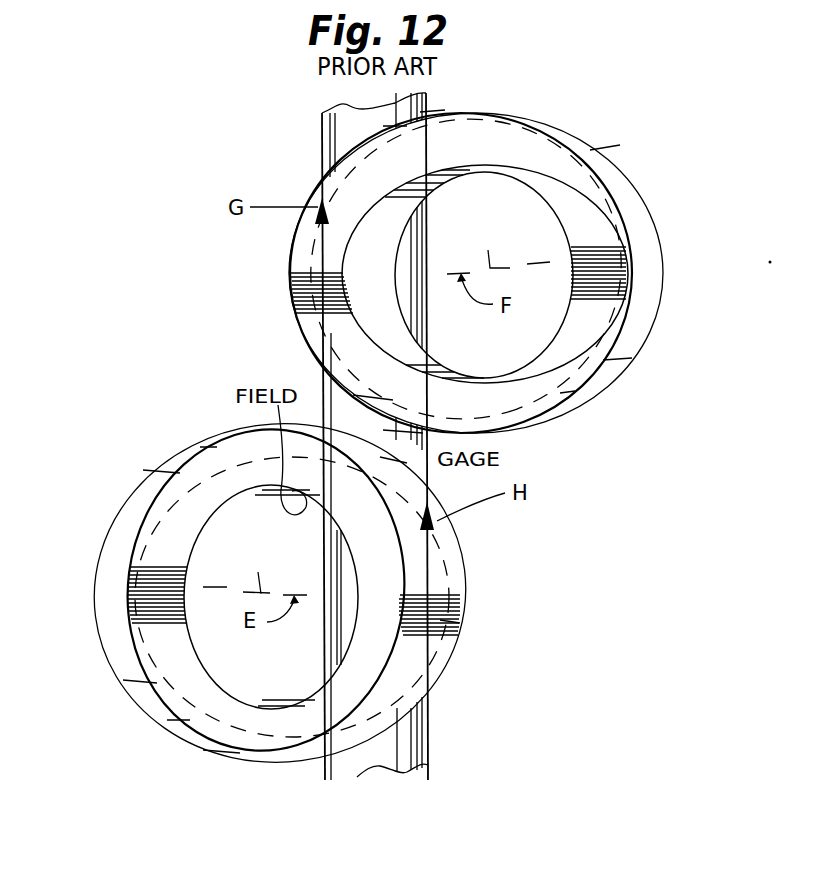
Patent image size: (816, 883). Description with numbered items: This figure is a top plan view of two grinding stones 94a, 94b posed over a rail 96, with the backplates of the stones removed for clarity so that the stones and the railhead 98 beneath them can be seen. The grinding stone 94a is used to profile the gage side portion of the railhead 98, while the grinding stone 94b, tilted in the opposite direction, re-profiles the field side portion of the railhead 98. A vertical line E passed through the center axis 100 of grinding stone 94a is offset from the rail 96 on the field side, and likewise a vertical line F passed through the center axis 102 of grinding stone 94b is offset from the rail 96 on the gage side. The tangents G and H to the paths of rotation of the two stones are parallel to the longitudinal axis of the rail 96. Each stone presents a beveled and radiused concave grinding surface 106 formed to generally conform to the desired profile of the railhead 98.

The grinding stone 94a is at (220, 416).
The grinding stone 94b is at (582, 113).
The rail 96 is at (322, 148).
The railhead 98 is at (327, 410).
The center axis 100 is at (260, 560).
The center axis 102 is at (497, 242).
The grinding surface 106 is at (300, 333).